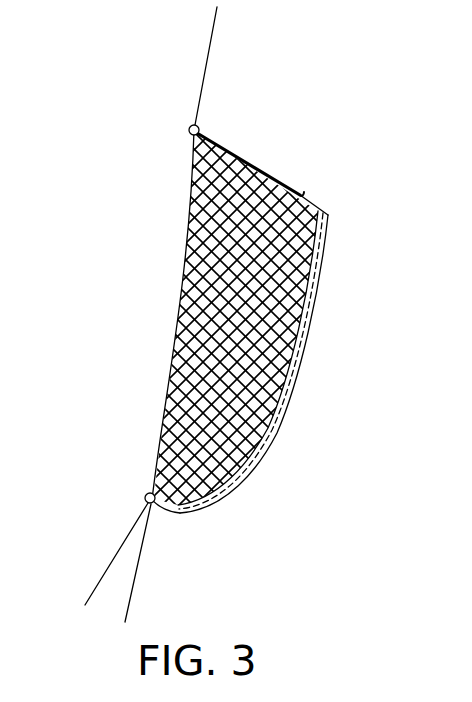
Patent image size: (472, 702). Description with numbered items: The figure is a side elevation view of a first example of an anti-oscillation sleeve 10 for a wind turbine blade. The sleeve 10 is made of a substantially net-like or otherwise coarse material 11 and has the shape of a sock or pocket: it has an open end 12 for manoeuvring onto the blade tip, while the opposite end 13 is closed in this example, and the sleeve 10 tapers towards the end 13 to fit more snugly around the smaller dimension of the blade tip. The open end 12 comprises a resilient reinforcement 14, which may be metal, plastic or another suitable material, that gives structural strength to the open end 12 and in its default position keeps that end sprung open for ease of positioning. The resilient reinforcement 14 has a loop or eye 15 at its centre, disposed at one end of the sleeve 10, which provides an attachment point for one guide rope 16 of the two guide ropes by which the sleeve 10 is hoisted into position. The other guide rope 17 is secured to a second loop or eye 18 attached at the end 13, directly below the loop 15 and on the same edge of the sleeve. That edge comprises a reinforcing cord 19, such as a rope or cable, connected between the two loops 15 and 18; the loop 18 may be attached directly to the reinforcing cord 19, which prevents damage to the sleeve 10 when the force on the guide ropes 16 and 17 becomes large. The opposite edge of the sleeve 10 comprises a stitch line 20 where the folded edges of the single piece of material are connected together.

The anti-oscillation sleeve 10 is at (204, 314).
The net-like material 11 is at (193, 295).
The open end 12 is at (268, 128).
The closed end 13 is at (190, 535).
The resilient reinforcement 14 is at (278, 182).
The loop 15 is at (189, 128).
The guide rope 16 is at (210, 35).
The guide rope 17 is at (116, 557).
The second loop 18 is at (145, 497).
The reinforcing cord 19 is at (166, 382).
The stitch line 20 is at (318, 290).